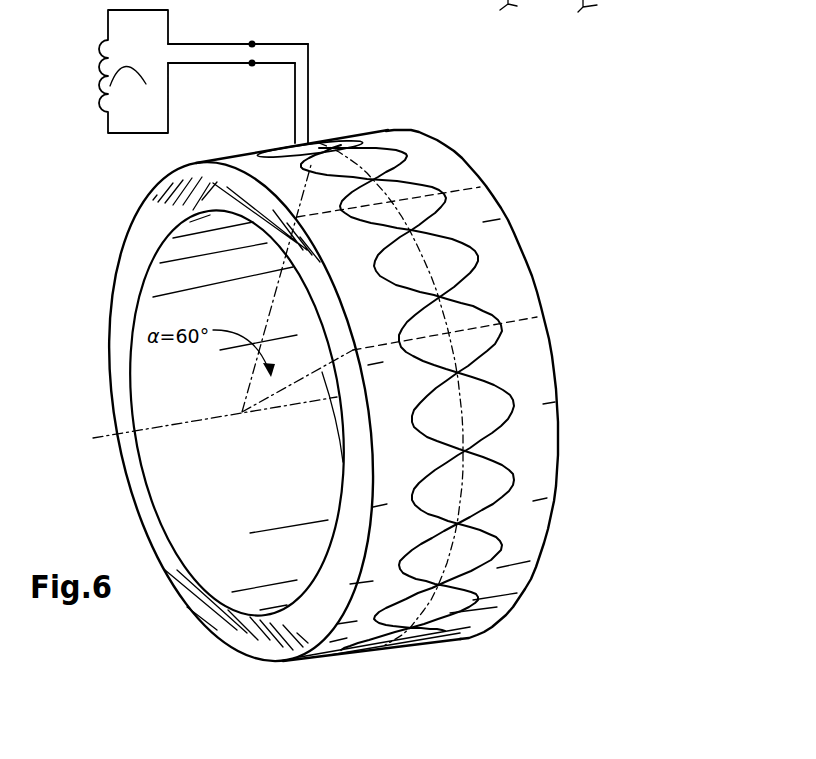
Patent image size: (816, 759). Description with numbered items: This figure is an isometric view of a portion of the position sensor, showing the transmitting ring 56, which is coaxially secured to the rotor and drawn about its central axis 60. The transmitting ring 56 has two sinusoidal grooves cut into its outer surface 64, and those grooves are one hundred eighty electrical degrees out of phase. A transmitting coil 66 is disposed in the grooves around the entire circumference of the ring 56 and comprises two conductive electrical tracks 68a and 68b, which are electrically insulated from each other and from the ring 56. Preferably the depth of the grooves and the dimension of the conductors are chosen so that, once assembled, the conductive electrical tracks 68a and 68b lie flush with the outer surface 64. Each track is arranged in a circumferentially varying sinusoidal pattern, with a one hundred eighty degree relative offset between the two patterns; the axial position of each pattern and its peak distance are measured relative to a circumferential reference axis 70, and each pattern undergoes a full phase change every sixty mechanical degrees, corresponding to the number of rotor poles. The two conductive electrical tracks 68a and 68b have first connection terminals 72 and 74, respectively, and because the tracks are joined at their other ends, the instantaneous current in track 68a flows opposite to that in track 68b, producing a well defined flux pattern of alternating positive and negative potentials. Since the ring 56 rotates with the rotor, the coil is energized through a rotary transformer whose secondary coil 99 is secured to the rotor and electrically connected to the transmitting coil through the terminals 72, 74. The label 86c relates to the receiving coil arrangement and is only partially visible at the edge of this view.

The transmitting ring 56 is at (113, 235).
The central axis 60 is at (187, 423).
The outer surface 64 is at (470, 216).
The transmitting coil 66 is at (289, 136).
The conductive electrical track 68a is at (437, 185).
The conductive electrical track 68b is at (490, 248).
The circumferential reference axis 70 is at (364, 160).
The first connection terminal 72 is at (252, 41).
The first connection terminal 74 is at (252, 67).
The secondary coil 99 is at (133, 71).
The adjacent figure element 86c is at (457, 14).